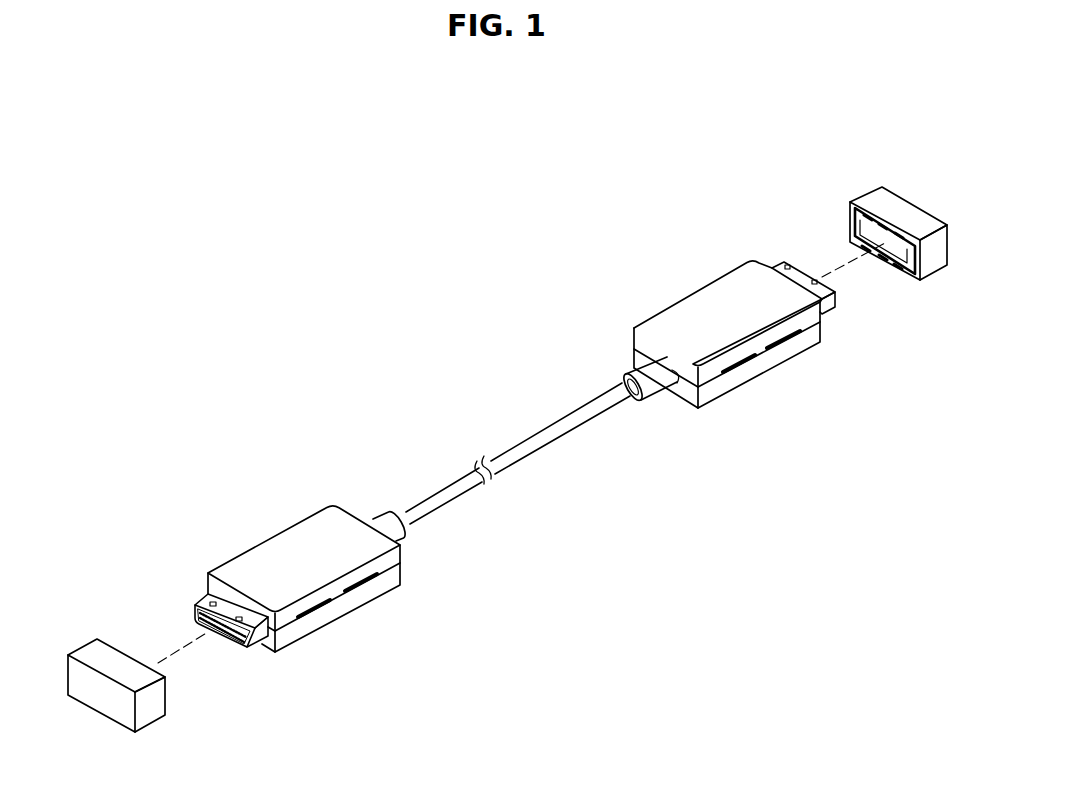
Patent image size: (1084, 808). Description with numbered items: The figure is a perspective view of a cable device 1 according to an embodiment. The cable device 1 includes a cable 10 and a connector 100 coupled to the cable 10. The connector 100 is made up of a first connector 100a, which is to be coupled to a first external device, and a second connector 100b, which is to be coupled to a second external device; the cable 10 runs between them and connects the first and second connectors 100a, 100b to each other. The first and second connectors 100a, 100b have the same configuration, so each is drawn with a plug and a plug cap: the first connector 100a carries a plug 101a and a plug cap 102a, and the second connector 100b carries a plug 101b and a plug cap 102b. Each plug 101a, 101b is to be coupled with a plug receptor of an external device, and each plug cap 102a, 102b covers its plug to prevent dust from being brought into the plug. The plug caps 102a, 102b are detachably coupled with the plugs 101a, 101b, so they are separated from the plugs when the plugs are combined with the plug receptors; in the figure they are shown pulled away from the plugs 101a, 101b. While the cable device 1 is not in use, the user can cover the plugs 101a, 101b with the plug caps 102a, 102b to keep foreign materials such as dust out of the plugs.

The cable device 1 is at (241, 326).
The cable 10 is at (537, 431).
The connector 100 is at (450, 676).
The first connector 100a is at (358, 612).
The second connector 100b is at (768, 372).
The plug 101a is at (205, 599).
The plug 101b is at (789, 262).
The plug cap 102a is at (93, 653).
The plug cap 102b is at (870, 202).